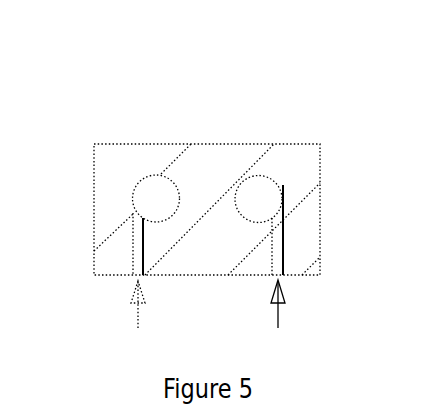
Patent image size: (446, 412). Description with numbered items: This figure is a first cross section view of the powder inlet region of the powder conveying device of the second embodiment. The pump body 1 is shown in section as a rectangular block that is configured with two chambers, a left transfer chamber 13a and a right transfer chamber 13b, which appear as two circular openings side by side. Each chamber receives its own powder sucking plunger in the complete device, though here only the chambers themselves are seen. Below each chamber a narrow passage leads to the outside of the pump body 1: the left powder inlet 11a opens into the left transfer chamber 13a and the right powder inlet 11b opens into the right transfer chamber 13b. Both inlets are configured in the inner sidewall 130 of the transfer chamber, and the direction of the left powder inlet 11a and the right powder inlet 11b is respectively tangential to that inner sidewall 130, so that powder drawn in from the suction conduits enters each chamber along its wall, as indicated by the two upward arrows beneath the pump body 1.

The pump body 1 is at (123, 158).
The left powder inlet 11a is at (131, 215).
The right powder inlet 11b is at (283, 222).
The left transfer chamber 13a is at (160, 184).
The right transfer chamber 13b is at (254, 188).
The inner sidewall of the transfer chamber 130 is at (283, 186).